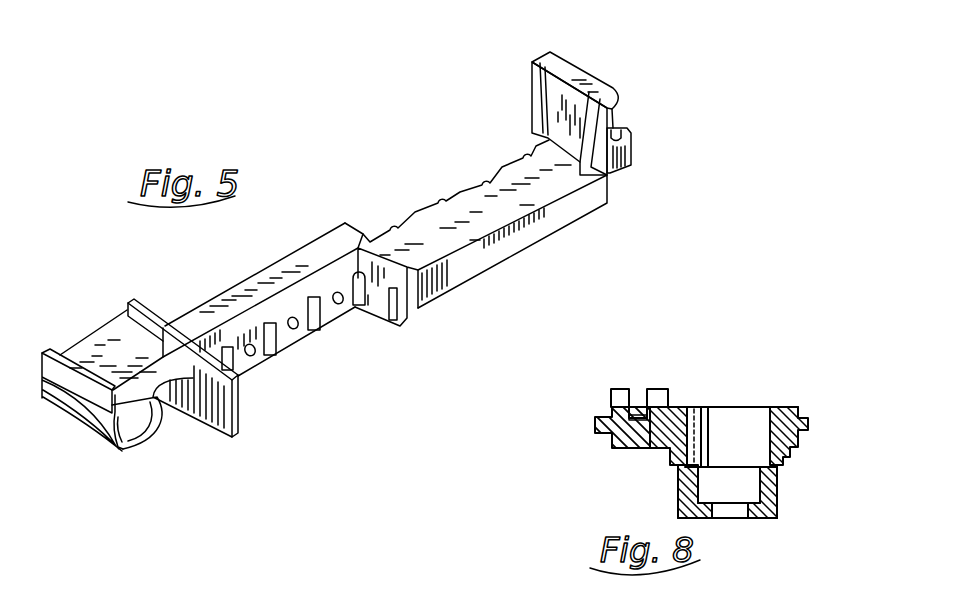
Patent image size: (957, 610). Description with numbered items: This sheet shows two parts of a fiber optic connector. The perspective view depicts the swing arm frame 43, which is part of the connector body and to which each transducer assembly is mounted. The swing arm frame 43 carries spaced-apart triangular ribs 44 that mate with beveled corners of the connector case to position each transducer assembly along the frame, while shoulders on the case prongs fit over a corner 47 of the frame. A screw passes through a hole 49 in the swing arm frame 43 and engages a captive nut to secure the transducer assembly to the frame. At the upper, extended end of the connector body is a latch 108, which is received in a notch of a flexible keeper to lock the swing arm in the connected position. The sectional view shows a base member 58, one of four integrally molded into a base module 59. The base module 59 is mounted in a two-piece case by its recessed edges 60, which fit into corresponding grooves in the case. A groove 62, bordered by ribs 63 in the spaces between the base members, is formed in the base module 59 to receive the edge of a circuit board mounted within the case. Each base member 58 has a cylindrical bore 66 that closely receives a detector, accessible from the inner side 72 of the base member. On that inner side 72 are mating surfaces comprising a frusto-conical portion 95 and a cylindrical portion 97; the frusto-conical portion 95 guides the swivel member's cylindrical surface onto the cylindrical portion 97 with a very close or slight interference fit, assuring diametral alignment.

In FIG. 5, the swing arm frame 43 is at (332, 240).
In FIG. 5, the corner 47 is at (305, 272).
In FIG. 5, the triangular ribs 44 is at (314, 332).
In FIG. 5, the hole 49 is at (250, 357).
In FIG. 5, the latch 108 is at (632, 140).
In FIG. 8, the recessed edges 60 is at (610, 412).
In FIG. 8, the ribs 63 is at (621, 389).
In FIG. 8, the groove 62 is at (638, 416).
In FIG. 8, the base module 59 is at (617, 456).
In FIG. 8, the base member 58 is at (667, 489).
In FIG. 8, the cylindrical bore 66 is at (760, 487).
In FIG. 8, the cylindrical portion 97 is at (777, 484).
In FIG. 8, the frusto-conical portion 95 is at (777, 503).
In FIG. 8, the inner side 72 is at (760, 520).